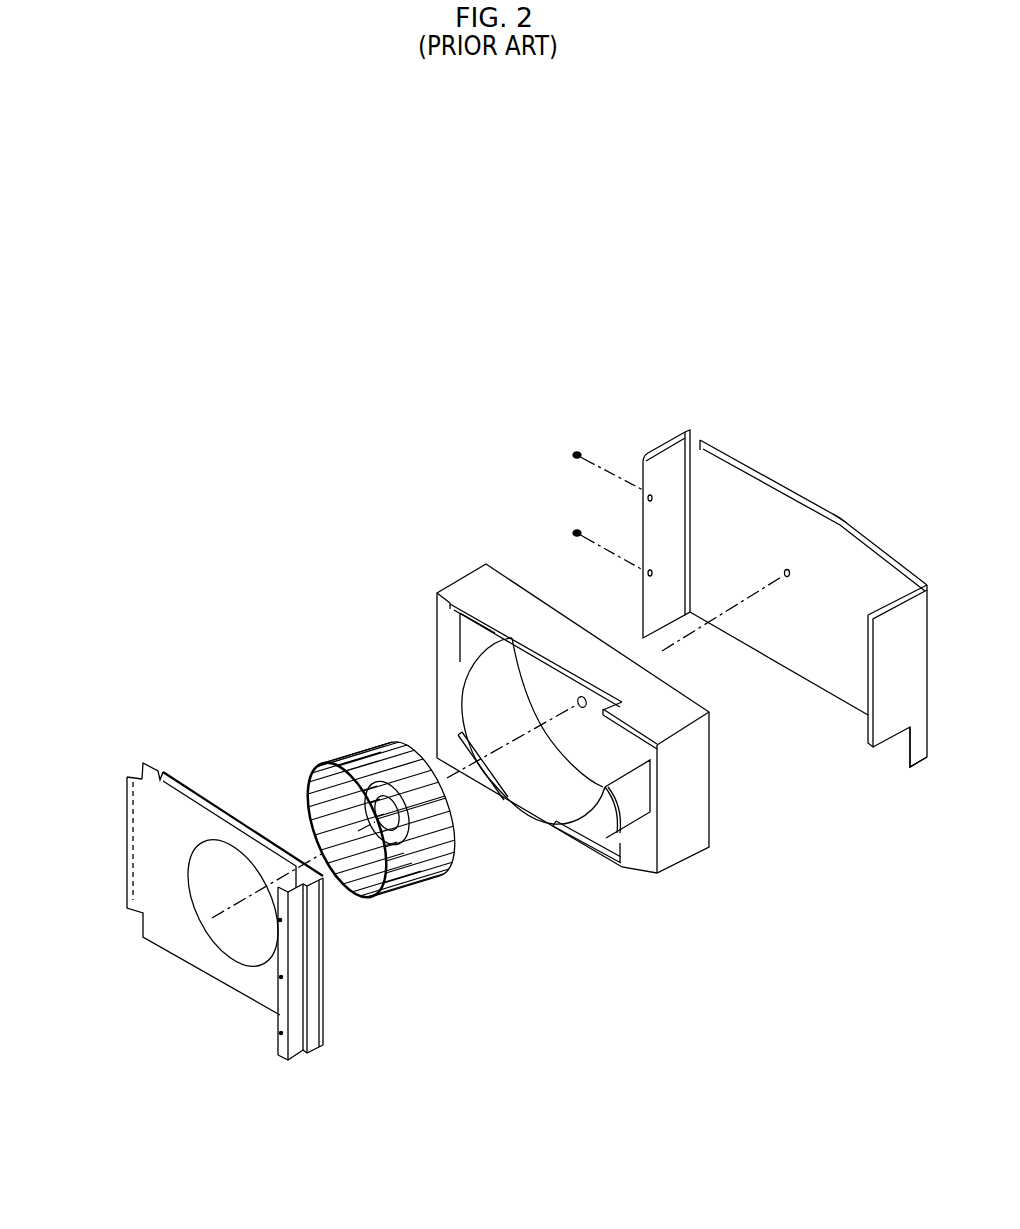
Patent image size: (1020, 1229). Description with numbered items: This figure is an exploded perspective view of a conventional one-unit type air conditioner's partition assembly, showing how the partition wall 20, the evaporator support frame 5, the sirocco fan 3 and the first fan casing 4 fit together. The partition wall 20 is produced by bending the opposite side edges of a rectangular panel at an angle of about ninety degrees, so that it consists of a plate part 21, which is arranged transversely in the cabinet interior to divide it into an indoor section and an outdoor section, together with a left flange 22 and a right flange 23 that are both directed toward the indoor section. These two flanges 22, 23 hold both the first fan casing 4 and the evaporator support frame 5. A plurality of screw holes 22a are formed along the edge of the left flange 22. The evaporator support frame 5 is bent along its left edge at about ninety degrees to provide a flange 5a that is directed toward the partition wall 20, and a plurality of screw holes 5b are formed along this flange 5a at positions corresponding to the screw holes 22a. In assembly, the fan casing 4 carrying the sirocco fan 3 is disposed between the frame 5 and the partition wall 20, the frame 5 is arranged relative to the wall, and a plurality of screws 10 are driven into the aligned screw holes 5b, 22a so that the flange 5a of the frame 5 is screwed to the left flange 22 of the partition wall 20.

The sirocco fan 3 is at (437, 870).
The first fan casing 4 is at (683, 838).
The evaporator support frame 5 is at (198, 788).
The flange 5a is at (130, 775).
The screw holes 5b is at (130, 802).
The screws 10 is at (573, 453).
The partition wall 20 is at (773, 459).
The plate part 21 is at (842, 512).
The left flange 22 is at (643, 462).
The screw holes 22a is at (648, 502).
The right flange 23 is at (883, 730).